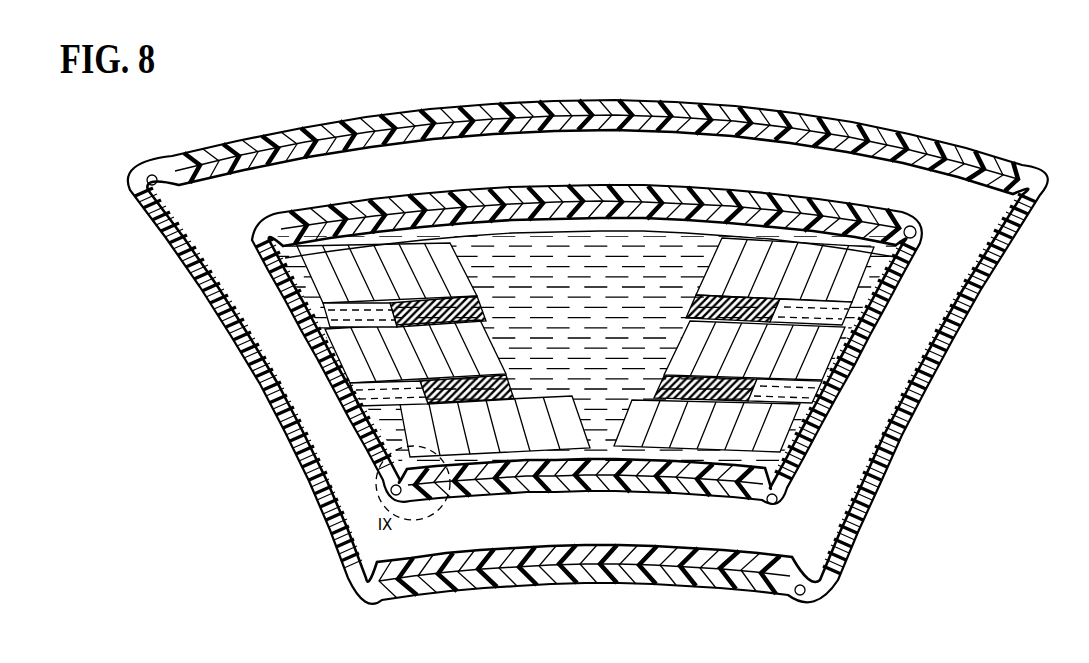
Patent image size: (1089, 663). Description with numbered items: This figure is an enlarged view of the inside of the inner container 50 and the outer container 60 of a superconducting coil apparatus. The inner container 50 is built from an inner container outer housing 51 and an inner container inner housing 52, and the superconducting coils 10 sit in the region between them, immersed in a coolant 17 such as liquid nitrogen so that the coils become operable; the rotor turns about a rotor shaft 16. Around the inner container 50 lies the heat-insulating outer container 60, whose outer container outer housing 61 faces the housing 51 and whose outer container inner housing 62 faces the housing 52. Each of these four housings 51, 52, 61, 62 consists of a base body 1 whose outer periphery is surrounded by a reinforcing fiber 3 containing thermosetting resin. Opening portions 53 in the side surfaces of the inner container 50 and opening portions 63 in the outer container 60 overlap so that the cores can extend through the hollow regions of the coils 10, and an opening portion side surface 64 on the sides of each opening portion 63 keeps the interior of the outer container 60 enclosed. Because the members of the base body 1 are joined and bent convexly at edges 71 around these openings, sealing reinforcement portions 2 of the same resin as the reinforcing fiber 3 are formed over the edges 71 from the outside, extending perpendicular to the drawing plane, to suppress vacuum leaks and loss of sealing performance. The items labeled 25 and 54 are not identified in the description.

The base body 1 is at (870, 457).
The sealing reinforcement portion 2 is at (795, 580).
The reinforcing fiber 3 is at (860, 500).
The superconducting coil 10 is at (393, 306).
The rotor shaft 16 is at (362, 318).
The coolant 17 is at (590, 423).
The gap 25 is at (627, 147).
The inner container 50 is at (603, 341).
The inner container outer housing 51 is at (506, 190).
The inner container inner housing 52 is at (540, 467).
The opening portion 53 is at (820, 463).
The inner frame right wall 54 is at (833, 392).
The outer container 60 is at (588, 341).
The outer container outer housing 61 is at (682, 127).
The outer container inner housing 62 is at (677, 560).
The opening portion 63 is at (173, 560).
The opening portion side surface 64 is at (933, 395).
The edge 71 is at (906, 235).